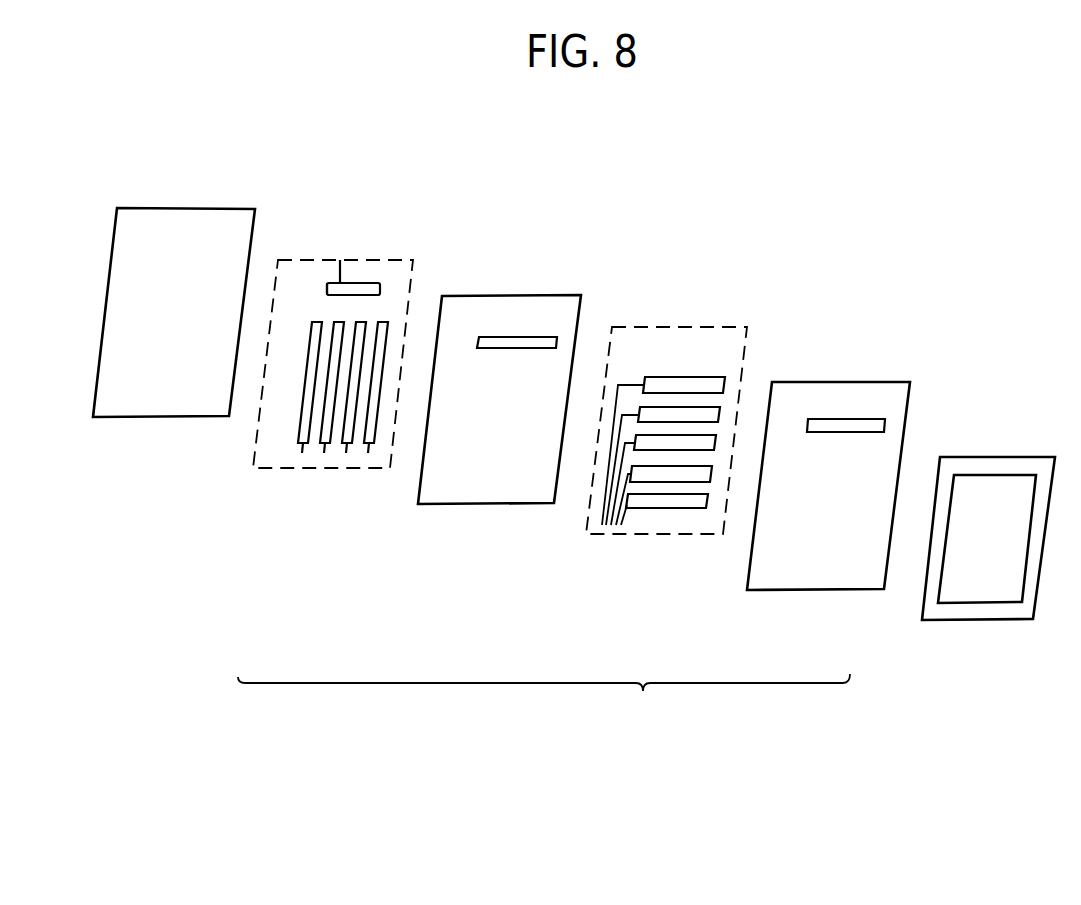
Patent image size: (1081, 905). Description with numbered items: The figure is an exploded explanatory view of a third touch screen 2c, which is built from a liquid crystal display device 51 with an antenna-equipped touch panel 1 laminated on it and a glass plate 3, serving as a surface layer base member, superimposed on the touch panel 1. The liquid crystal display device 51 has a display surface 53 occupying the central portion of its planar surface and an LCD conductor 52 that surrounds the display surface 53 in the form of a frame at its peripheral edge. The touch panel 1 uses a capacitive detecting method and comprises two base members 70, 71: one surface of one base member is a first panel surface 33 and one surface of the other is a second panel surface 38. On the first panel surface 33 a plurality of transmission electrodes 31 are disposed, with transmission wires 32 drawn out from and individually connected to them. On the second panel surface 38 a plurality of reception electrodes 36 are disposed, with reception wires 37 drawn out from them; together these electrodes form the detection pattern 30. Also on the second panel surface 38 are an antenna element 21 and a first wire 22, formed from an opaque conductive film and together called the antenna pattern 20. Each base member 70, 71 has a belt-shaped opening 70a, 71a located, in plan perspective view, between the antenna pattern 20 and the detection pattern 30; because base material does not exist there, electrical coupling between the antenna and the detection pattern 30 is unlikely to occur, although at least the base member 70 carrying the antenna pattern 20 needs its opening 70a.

The antenna-equipped touch panel 1 is at (544, 703).
The third touch screen 2c is at (785, 272).
The glass plate 3 is at (148, 398).
The antenna pattern 20 is at (357, 285).
The antenna element 21 is at (328, 290).
The first wire 22 is at (333, 281).
The detection pattern 30 is at (481, 486).
The transmission electrodes 31 is at (664, 502).
The transmission wires 32 is at (609, 528).
The first panel surface 33 is at (628, 342).
The reception electrodes 36 is at (373, 426).
The reception wires 37 is at (325, 448).
The second panel surface 38 is at (403, 270).
The liquid crystal display device 51 is at (989, 546).
The LCD conductor 52 is at (983, 467).
The display surface 53 is at (1008, 505).
The base member 70 is at (798, 575).
The opening 70a is at (878, 413).
The base member 71 is at (470, 488).
The opening 71a is at (548, 333).